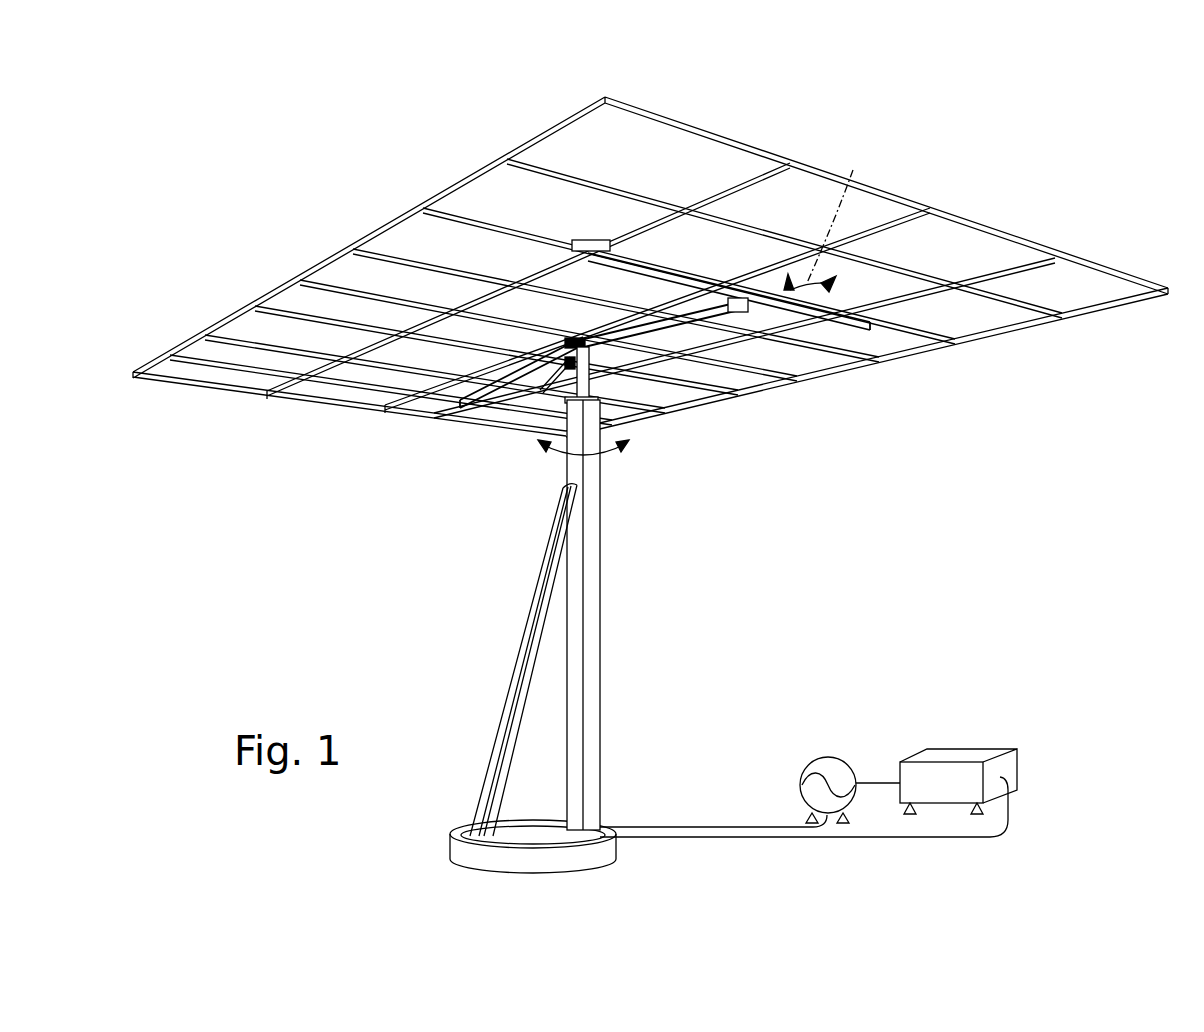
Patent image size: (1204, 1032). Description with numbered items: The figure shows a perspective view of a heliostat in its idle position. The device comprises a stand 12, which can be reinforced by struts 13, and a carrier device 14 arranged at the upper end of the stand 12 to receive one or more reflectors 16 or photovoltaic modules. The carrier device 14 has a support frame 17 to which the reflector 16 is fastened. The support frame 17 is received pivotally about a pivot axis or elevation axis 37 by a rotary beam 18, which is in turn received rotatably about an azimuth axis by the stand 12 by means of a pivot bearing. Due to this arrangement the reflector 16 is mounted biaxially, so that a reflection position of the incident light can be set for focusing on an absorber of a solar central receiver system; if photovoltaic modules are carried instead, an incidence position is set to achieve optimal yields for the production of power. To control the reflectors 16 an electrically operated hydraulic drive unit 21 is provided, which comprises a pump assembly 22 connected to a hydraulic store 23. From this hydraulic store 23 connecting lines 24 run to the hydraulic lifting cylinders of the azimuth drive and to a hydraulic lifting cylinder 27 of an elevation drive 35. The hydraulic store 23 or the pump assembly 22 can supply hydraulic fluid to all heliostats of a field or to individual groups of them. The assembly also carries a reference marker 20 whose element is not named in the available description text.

The stand 12 is at (597, 665).
The struts 13 is at (525, 650).
The carrier device 14 is at (578, 438).
The reflector 16 is at (650, 267).
The support frame 17 is at (677, 280).
The rotary beam 18 is at (697, 320).
The control system 20 is at (818, 706).
The hydraulic drive unit 21 is at (909, 741).
The pump assembly 22 is at (990, 740).
The hydraulic store 23 is at (826, 752).
The connecting lines 24 is at (742, 828).
The hydraulic lifting cylinder 27 is at (523, 393).
The elevation drive 35 is at (478, 440).
The elevation axis 37 is at (828, 217).